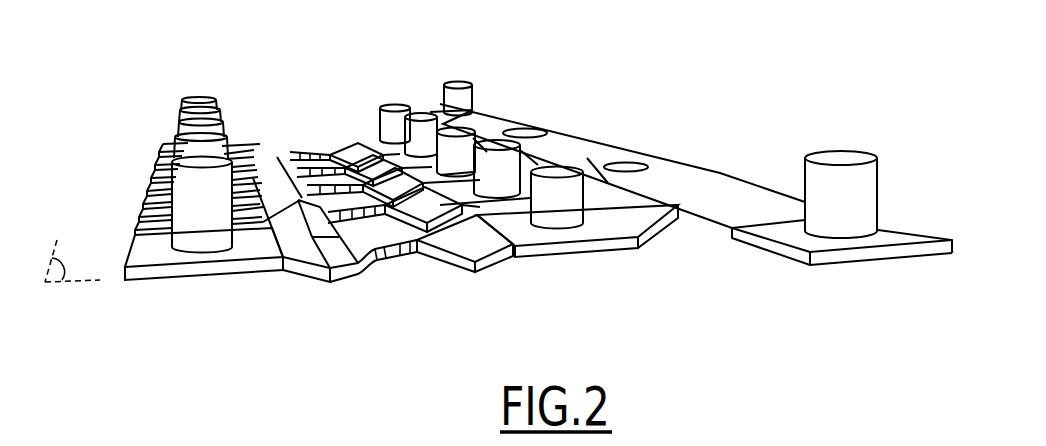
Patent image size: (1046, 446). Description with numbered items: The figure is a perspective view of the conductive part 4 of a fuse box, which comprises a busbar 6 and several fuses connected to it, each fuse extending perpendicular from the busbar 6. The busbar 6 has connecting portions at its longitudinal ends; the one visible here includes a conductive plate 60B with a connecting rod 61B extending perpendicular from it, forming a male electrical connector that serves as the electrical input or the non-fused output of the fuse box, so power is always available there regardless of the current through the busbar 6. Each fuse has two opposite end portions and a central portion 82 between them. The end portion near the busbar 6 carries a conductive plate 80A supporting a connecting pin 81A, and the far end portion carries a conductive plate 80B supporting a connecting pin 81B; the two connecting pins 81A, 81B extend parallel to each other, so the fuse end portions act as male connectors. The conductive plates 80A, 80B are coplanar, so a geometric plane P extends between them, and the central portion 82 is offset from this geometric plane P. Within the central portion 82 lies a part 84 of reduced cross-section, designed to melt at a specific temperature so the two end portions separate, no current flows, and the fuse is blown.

The conductive part 4 is at (260, 72).
The busbar 6 is at (703, 185).
The conductive plate 60B is at (895, 233).
The connecting rod 61B is at (855, 185).
The conductive plate 80A is at (595, 227).
The conductive plate 80B is at (158, 250).
The connecting pin 81A is at (555, 192).
The connecting pin 81B is at (190, 207).
The central portion 82 is at (513, 288).
The part of reduced cross-section 84 is at (332, 192).
The geometric plane P is at (72, 261).